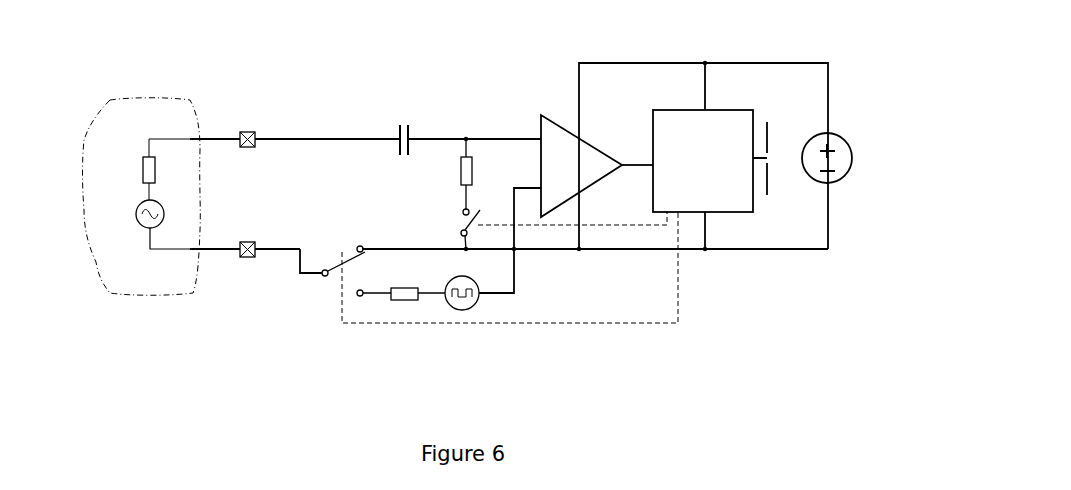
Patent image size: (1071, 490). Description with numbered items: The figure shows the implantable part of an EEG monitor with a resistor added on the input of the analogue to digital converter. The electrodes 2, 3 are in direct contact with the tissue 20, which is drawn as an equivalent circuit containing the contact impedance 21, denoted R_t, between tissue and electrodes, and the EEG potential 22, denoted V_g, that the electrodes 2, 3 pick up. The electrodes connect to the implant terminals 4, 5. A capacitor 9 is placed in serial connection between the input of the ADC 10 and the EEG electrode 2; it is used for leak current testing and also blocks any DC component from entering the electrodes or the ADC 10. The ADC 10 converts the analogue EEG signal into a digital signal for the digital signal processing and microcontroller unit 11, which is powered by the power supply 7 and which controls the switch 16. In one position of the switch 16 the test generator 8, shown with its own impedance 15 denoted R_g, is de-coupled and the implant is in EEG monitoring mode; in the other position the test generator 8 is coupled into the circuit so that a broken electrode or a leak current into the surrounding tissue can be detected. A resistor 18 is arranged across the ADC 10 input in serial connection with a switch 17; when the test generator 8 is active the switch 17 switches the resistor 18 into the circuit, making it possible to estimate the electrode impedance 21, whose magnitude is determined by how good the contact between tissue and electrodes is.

The electrode 2 is at (193, 131).
The electrode 3 is at (192, 258).
The implant terminal 4 is at (247, 130).
The implant terminal 5 is at (247, 258).
The power supply 7 is at (843, 172).
The test generator 8 is at (473, 307).
The capacitor 9 is at (400, 130).
The analogue to digital converter 10 is at (547, 117).
The digital signal processing and microcontroller unit 11 is at (720, 107).
The impedance of the test generator 15 is at (402, 301).
The switch 16 is at (343, 257).
The switch 17 is at (462, 222).
The resistor 18 is at (460, 167).
The tissue 20 is at (92, 140).
The contact impedance 21 is at (142, 156).
The EEG potential 22 is at (140, 230).